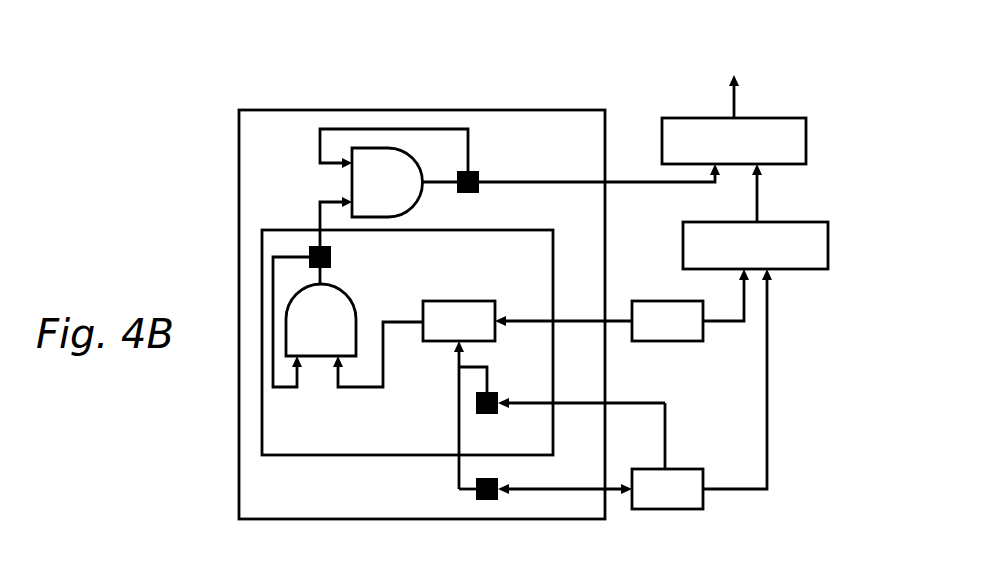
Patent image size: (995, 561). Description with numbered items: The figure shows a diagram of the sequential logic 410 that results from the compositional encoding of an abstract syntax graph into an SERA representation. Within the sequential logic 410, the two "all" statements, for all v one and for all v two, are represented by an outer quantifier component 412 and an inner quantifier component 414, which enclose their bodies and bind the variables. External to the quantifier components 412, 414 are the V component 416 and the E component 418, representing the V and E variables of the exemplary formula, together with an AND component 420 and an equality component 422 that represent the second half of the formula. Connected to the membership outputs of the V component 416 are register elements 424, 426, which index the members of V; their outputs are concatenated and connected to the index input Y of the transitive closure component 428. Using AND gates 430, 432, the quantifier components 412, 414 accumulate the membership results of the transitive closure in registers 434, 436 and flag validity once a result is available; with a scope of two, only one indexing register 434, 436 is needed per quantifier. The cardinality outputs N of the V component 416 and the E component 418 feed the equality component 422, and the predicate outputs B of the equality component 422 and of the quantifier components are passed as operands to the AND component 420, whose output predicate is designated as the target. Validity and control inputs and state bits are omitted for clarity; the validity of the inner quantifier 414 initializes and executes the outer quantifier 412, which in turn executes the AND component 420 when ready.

The sequential logic 410 is at (552, 82).
The quantifier component 412 is at (239, 222).
The quantifier component 414 is at (262, 273).
The V component 416 is at (676, 469).
The E component 418 is at (665, 341).
The AND component 420 is at (745, 118).
The equality component 422 is at (765, 222).
The register element 424 is at (497, 394).
The register element 426 is at (476, 492).
The transitive closure component 428 is at (469, 301).
The AND gate 430 is at (321, 320).
The AND gate 432 is at (387, 182).
The register 434 is at (331, 254).
The register 436 is at (479, 173).